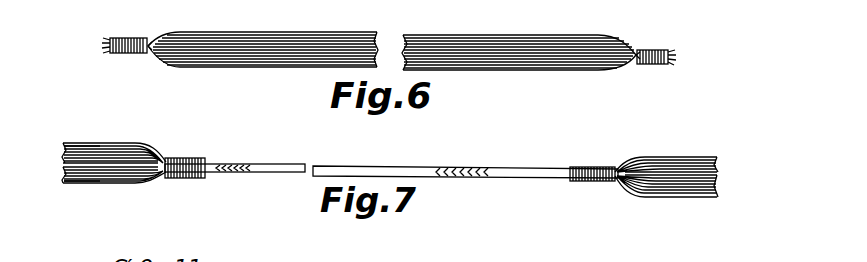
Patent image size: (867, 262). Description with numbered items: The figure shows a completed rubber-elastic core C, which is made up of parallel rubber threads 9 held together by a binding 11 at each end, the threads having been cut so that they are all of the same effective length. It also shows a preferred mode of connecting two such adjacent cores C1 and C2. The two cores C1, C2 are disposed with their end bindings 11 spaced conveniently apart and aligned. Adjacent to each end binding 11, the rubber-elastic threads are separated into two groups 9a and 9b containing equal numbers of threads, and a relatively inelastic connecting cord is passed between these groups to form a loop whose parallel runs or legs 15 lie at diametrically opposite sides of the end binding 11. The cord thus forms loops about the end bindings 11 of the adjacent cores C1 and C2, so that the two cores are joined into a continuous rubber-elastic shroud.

In FIG. 6, the core C is at (446, 29).
In FIG. 7, the core C1 is at (110, 134).
In FIG. 7, the core C2 is at (696, 151).
In FIG. 6, the rubber threads 9 is at (168, 36).
In FIG. 7, the group of threads 9a is at (86, 145).
In FIG. 7, the group of threads 9b is at (86, 183).
In FIG. 6, the binding 11 is at (127, 36).
In FIG. 7, the binding 11 is at (186, 158).
In FIG. 7, the legs 15 is at (366, 166).